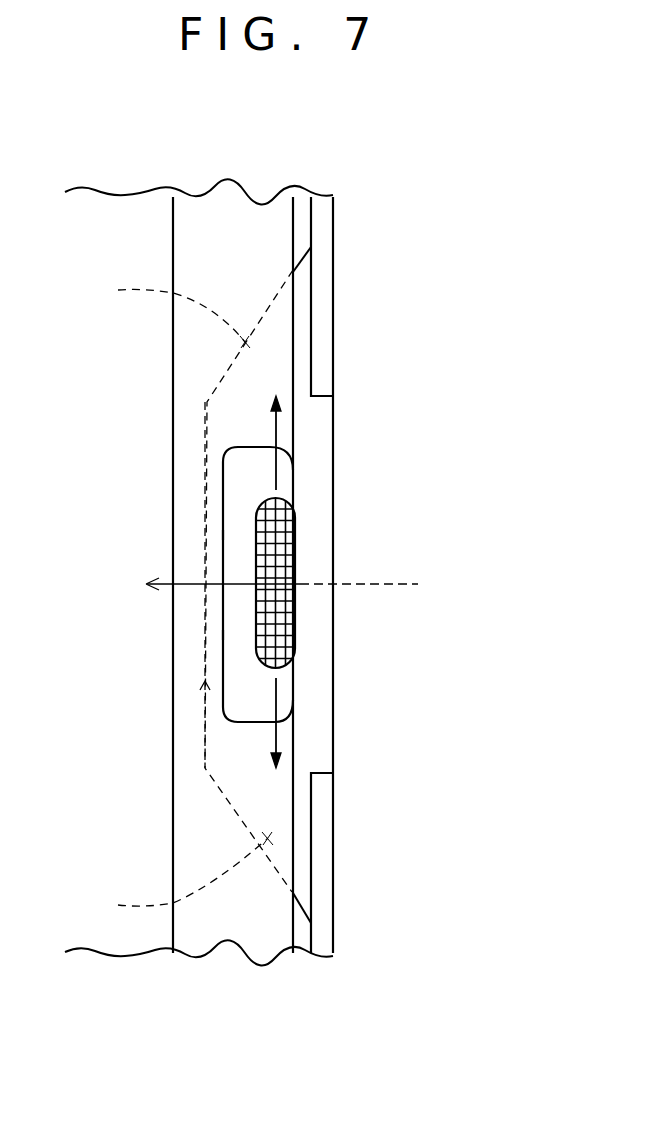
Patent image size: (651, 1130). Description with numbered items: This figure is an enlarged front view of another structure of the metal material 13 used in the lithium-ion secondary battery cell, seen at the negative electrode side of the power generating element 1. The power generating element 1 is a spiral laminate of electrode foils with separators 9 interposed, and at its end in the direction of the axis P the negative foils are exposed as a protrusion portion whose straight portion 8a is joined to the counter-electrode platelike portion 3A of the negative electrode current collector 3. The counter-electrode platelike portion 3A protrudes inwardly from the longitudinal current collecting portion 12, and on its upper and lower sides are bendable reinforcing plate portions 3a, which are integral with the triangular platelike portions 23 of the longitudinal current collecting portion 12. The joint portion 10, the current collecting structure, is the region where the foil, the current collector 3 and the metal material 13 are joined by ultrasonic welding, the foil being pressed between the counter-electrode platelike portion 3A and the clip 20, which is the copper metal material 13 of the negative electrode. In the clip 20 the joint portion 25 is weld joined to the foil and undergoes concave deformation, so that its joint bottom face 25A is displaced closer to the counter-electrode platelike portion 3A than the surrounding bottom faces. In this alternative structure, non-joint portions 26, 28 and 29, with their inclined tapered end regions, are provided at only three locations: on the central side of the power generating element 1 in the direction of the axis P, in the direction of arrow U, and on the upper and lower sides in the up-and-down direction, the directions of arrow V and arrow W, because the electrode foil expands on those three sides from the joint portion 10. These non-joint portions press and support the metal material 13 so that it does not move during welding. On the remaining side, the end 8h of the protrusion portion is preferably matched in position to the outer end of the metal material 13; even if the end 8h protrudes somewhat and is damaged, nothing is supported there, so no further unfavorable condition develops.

The power generating element 1 is at (294, 291).
The negative electrode current collector 3 is at (334, 230).
The reinforcing plate portion 3a is at (190, 593).
The counter-electrode platelike portion 3A is at (213, 685).
The straight portion 8a is at (278, 805).
The end of the protrusion portion 8h is at (297, 930).
The separator 9 is at (158, 268).
The joint portion 10 is at (307, 635).
The longitudinal current collecting portion 12 is at (322, 296).
The metal material 13 is at (294, 690).
The clip 20 is at (293, 680).
The triangular platelike portion 23 is at (325, 333).
The joint portion 25 is at (283, 552).
The joint bottom face 25A is at (275, 583).
The non-joint portion 26 is at (235, 548).
The non-joint portion 28 is at (247, 455).
The non-joint portion 29 is at (247, 712).
The arrow V is at (300, 423).
The arrow W is at (278, 737).
The arrow U is at (185, 585).
The axis P is at (400, 583).